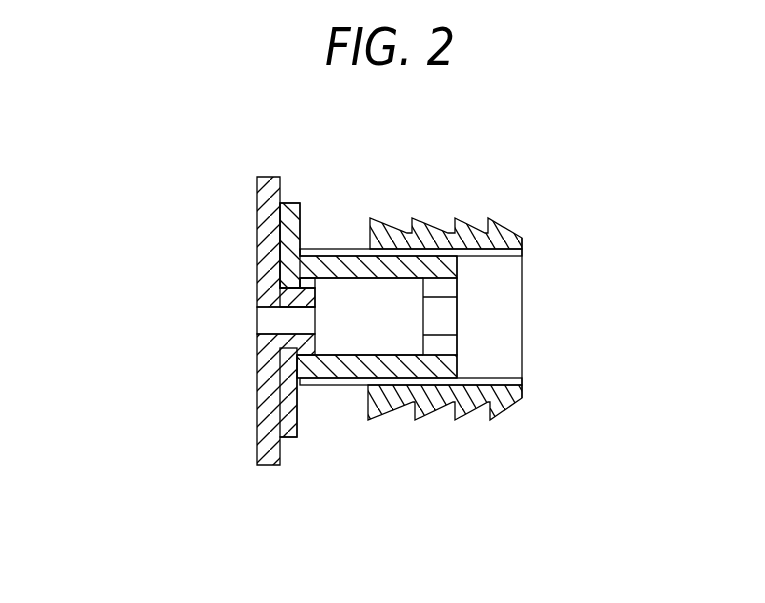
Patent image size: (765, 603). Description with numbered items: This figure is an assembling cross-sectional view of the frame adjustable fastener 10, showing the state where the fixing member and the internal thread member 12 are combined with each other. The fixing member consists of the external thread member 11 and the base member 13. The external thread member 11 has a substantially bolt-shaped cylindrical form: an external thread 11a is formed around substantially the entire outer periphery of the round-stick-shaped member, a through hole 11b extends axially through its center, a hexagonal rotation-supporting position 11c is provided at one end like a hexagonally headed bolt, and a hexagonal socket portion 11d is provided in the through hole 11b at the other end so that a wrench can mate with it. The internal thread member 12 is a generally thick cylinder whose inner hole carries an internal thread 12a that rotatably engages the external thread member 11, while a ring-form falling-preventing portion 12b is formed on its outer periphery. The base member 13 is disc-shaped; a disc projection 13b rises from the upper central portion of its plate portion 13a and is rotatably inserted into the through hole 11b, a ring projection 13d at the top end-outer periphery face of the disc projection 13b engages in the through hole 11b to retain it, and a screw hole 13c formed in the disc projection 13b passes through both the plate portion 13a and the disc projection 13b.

The frame adjustable fastener 10 is at (385, 339).
The external thread member 11 is at (451, 307).
The external thread 11a is at (324, 262).
The through hole 11b is at (356, 300).
The rotation-supporting position 11c is at (289, 202).
The hexagonal socket portion 11d is at (442, 350).
The internal thread member 12 is at (475, 339).
The internal thread 12a is at (494, 258).
The falling-preventing portion 12b is at (488, 218).
The base member 13 is at (229, 348).
The plate portion 13a is at (260, 189).
The disc projection 13b is at (282, 340).
The screw hole 13c is at (268, 315).
The ring projection 13d is at (278, 268).